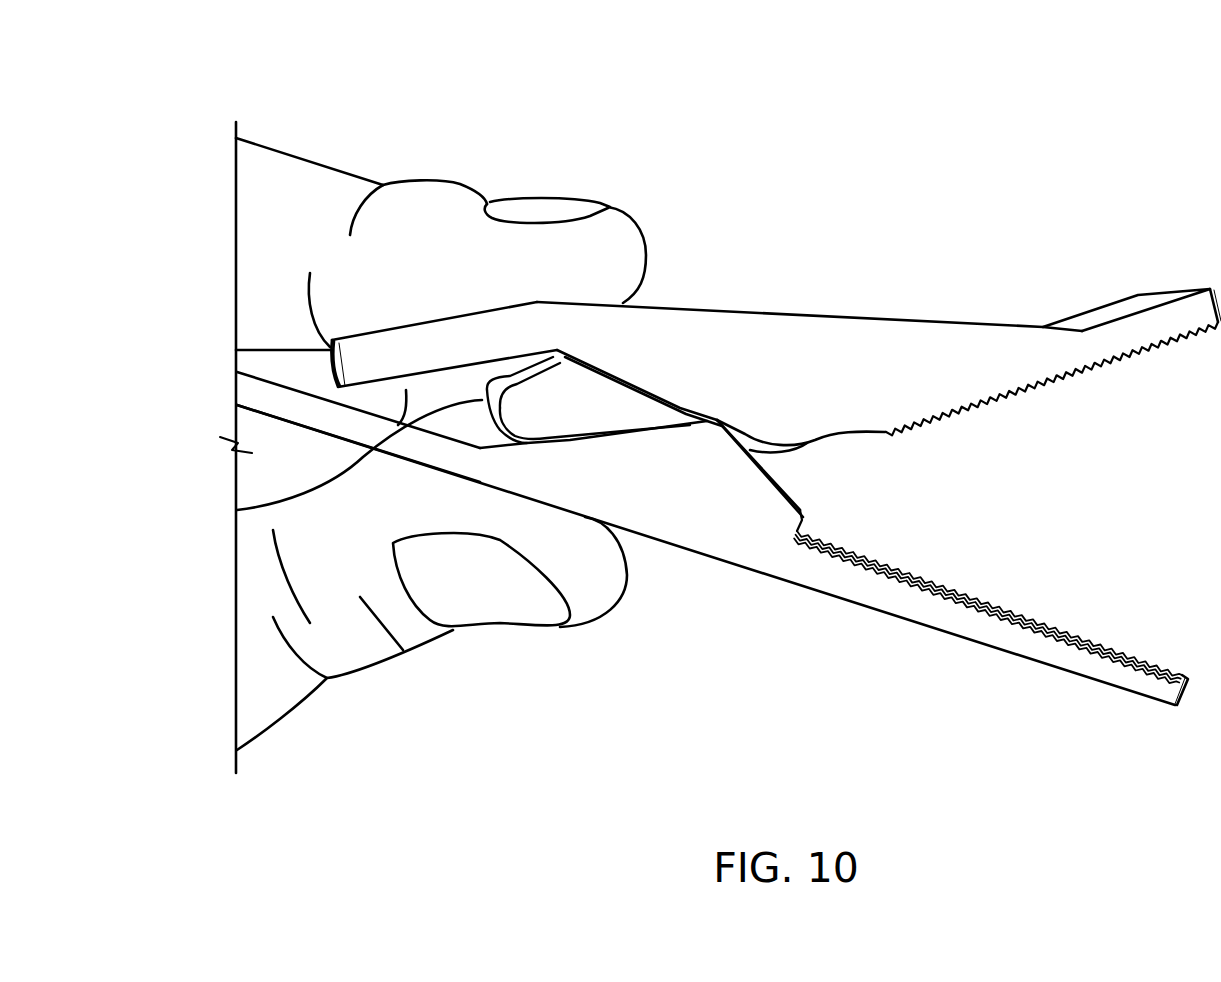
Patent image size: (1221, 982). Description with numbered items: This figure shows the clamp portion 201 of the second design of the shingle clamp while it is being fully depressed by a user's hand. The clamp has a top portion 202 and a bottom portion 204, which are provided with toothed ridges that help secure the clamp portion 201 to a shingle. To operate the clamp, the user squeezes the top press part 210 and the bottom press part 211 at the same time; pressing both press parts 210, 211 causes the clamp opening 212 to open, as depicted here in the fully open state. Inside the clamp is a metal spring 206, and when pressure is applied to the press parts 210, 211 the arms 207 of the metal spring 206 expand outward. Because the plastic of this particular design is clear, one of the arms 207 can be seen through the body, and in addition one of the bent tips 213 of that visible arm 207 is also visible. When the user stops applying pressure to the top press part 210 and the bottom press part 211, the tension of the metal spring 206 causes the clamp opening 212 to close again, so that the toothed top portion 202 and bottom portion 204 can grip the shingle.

The clamp portion 201 is at (204, 73).
The top portion 202 is at (953, 327).
The bottom portion 204 is at (887, 607).
The metal spring 206 is at (485, 398).
The arms 207 is at (693, 427).
The top press part 210 is at (363, 362).
The bottom press part 211 is at (323, 413).
The clamp opening 212 is at (1087, 637).
The bent tips 213 is at (808, 353).